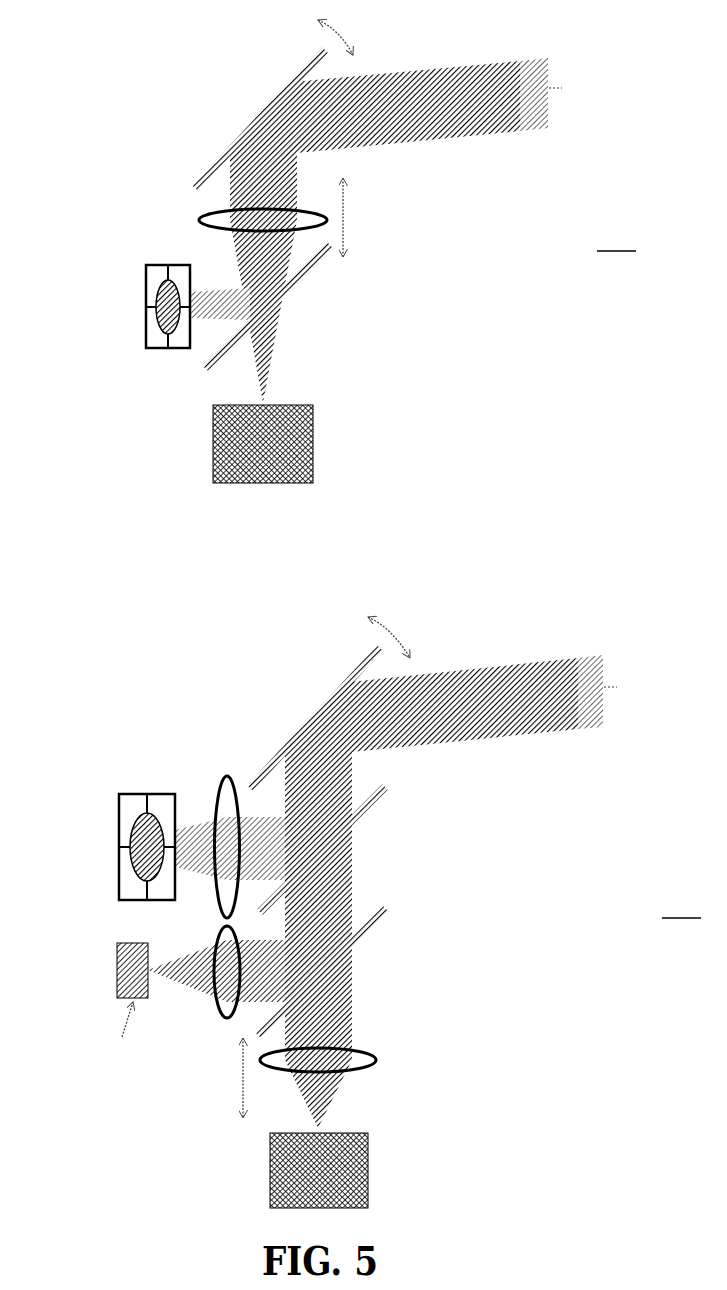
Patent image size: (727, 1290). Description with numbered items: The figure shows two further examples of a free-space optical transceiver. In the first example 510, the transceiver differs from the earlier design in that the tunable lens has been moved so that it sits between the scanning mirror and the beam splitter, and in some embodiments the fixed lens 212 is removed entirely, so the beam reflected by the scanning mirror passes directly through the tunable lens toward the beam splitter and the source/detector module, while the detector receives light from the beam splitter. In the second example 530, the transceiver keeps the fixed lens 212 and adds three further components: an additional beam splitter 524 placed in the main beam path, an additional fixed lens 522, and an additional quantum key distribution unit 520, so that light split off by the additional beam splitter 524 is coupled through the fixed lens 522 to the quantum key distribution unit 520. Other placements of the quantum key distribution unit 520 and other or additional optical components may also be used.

The fixed lens 212 is at (223, 782).
The optical transceiver example 510 is at (616, 241).
The quantum key distribution unit 520 is at (117, 970).
The fixed lens 522 is at (223, 1022).
The beam splitter 524 is at (373, 923).
The optical transceiver example 530 is at (681, 908).